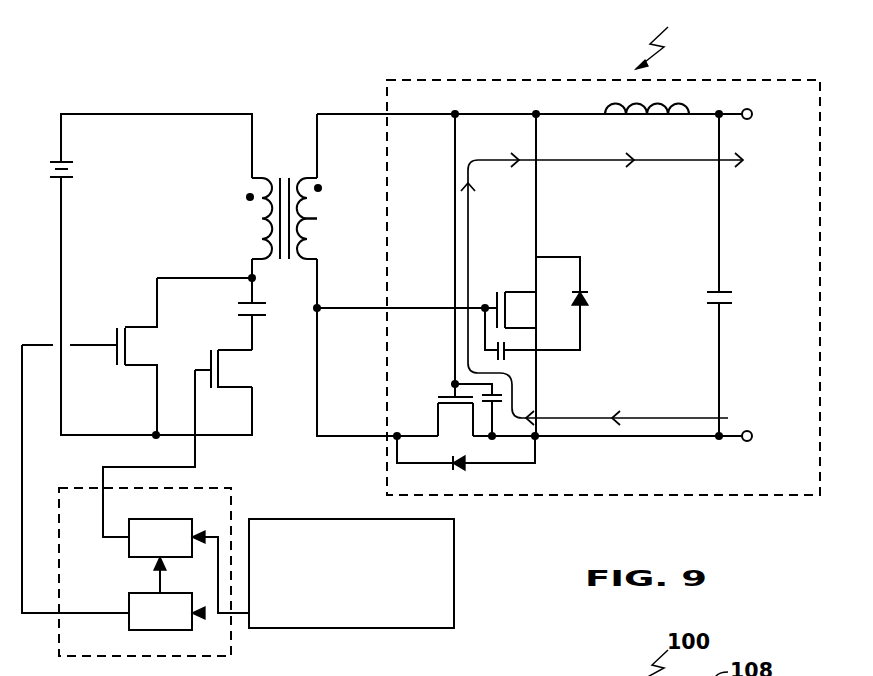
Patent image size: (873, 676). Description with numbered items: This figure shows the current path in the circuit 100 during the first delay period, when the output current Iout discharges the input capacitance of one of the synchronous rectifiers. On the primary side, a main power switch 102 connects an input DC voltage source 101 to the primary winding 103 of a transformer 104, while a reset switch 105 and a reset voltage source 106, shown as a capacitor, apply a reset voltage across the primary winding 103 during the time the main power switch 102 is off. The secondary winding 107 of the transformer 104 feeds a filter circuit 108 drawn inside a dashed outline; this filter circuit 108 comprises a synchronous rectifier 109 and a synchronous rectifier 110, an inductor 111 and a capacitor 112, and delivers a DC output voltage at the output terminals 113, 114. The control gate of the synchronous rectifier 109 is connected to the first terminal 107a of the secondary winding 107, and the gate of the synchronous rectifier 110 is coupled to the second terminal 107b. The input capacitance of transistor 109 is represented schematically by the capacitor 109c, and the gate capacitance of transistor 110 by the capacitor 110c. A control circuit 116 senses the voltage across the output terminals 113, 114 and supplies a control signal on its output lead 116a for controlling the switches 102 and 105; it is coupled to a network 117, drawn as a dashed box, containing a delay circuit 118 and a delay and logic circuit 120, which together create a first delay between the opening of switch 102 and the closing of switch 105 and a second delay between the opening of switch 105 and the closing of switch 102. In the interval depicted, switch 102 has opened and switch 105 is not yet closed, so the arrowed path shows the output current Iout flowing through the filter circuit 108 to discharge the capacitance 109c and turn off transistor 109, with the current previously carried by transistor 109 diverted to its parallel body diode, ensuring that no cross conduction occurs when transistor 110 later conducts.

The circuit 100 is at (673, 38).
The input DC voltage source 101 is at (66, 161).
The main power switch 102 is at (145, 366).
The primary winding 103 is at (248, 225).
The transformer 104 is at (287, 176).
The reset switch 105 is at (248, 371).
The reset voltage source 106 is at (255, 298).
The secondary winding 107 is at (339, 194).
The first terminal of secondary winding 107a is at (318, 165).
The second terminal of secondary winding 107b is at (318, 267).
The filter circuit 108 is at (683, 79).
The synchronous rectifier 109 is at (452, 383).
The capacitor representing input capacitance of transistor 109 109c is at (496, 405).
The synchronous rectifier 110 is at (530, 290).
The capacitor representing gate capacitance of transistor 110 110c is at (507, 355).
The inductor 111 is at (657, 116).
The capacitor 112 is at (722, 306).
The output terminal 113 is at (733, 108).
The output terminal 114 is at (733, 432).
The control circuit 116 is at (455, 577).
The output lead 116a is at (242, 616).
The network 117 is at (143, 657).
The delay circuit 118 is at (160, 611).
The delay and logic circuit 120 is at (160, 538).